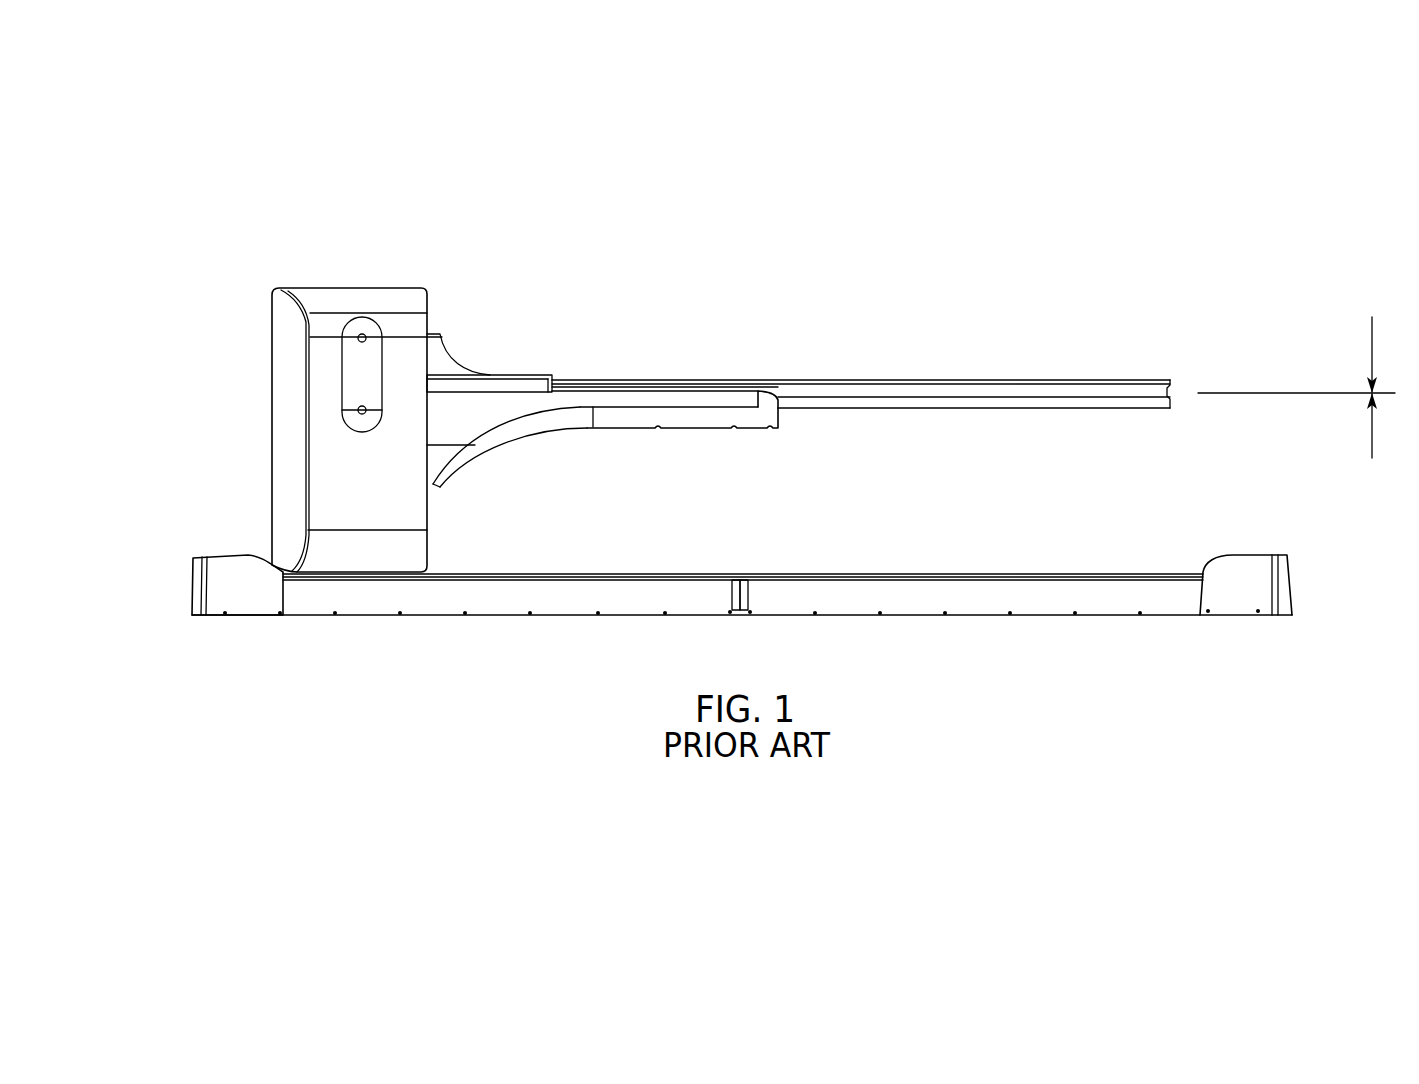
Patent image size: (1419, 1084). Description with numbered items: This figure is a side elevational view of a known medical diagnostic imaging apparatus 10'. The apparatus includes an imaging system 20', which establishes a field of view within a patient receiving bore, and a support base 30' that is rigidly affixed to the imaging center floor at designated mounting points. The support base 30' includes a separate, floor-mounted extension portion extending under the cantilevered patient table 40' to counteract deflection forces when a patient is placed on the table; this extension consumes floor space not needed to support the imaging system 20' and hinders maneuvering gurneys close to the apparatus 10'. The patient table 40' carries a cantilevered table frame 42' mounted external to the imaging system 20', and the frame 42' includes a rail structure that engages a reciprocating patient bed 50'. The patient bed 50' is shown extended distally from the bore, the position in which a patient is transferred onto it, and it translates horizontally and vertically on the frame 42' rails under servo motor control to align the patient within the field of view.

The medical diagnostic imaging apparatus 10' is at (771, 444).
The imaging system 20' is at (294, 430).
The support base 30' is at (742, 629).
The patient table 40' is at (605, 414).
The table frame 42' is at (507, 396).
The patient bed 50' is at (861, 354).